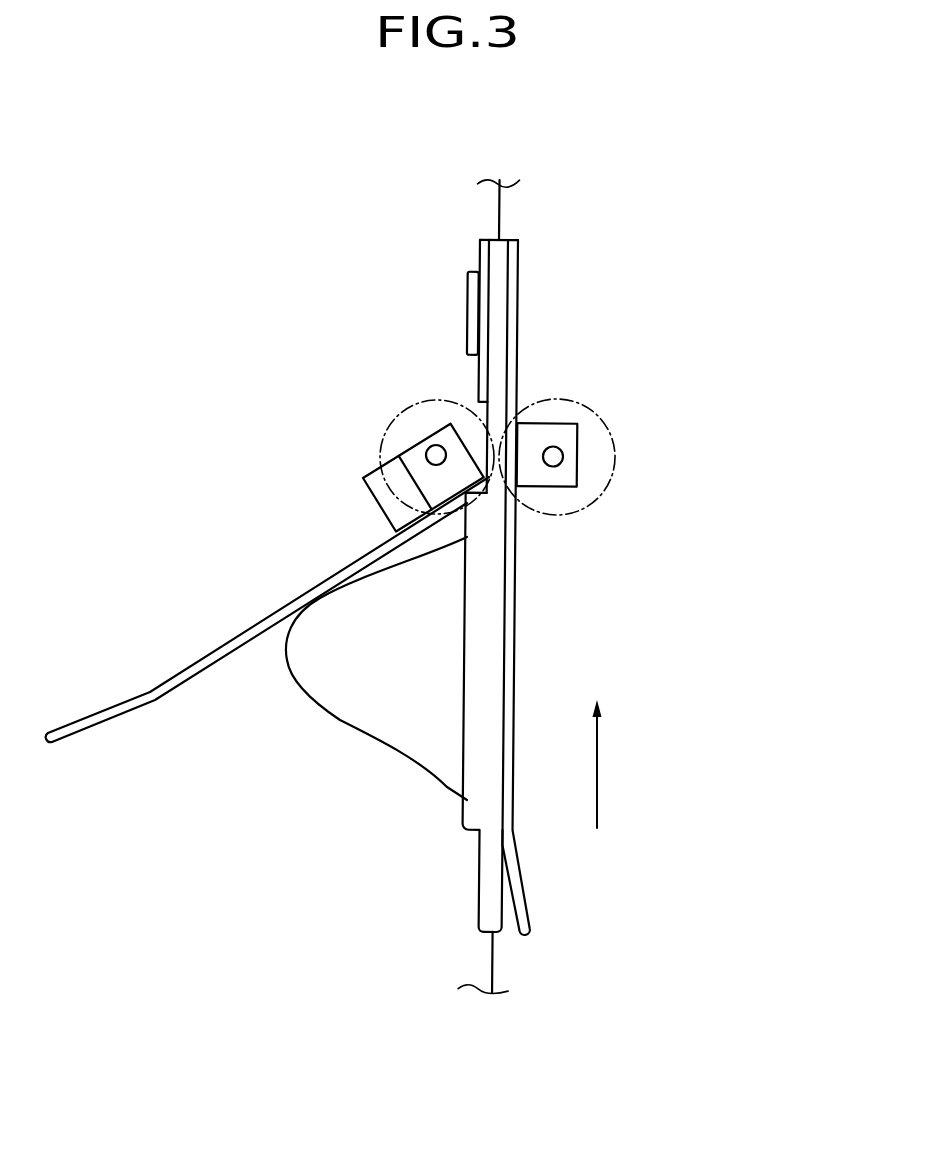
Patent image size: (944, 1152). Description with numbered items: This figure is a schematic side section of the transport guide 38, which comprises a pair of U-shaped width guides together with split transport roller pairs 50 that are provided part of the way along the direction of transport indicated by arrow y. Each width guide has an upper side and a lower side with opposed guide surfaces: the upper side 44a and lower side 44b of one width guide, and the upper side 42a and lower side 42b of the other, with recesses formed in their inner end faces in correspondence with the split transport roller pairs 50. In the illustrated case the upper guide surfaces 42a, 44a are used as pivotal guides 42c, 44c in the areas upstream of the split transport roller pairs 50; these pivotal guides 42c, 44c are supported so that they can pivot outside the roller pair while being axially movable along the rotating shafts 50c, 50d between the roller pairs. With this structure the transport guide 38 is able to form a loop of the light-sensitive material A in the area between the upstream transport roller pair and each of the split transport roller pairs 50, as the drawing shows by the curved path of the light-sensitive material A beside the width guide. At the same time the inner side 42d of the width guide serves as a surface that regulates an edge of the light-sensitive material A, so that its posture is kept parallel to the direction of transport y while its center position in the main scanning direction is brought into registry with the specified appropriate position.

The transport guide 38 is at (688, 176).
The upper side of width guide 44 44a is at (395, 320).
The upper side of width guide 42 42a is at (478, 247).
The lower side of width guide 44 44b is at (628, 587).
The lower side of width guide 42 42b is at (512, 577).
The pivotal guide 44c is at (267, 609).
The pivotal guide 42c is at (223, 645).
The inner side of width guide 42 42d is at (488, 650).
The split transport roller pairs 50 is at (380, 425).
The rotating shaft 50c is at (436, 450).
The rotating shaft 50d is at (555, 455).
The light-sensitive material A is at (499, 205).
The direction of transport y is at (597, 770).